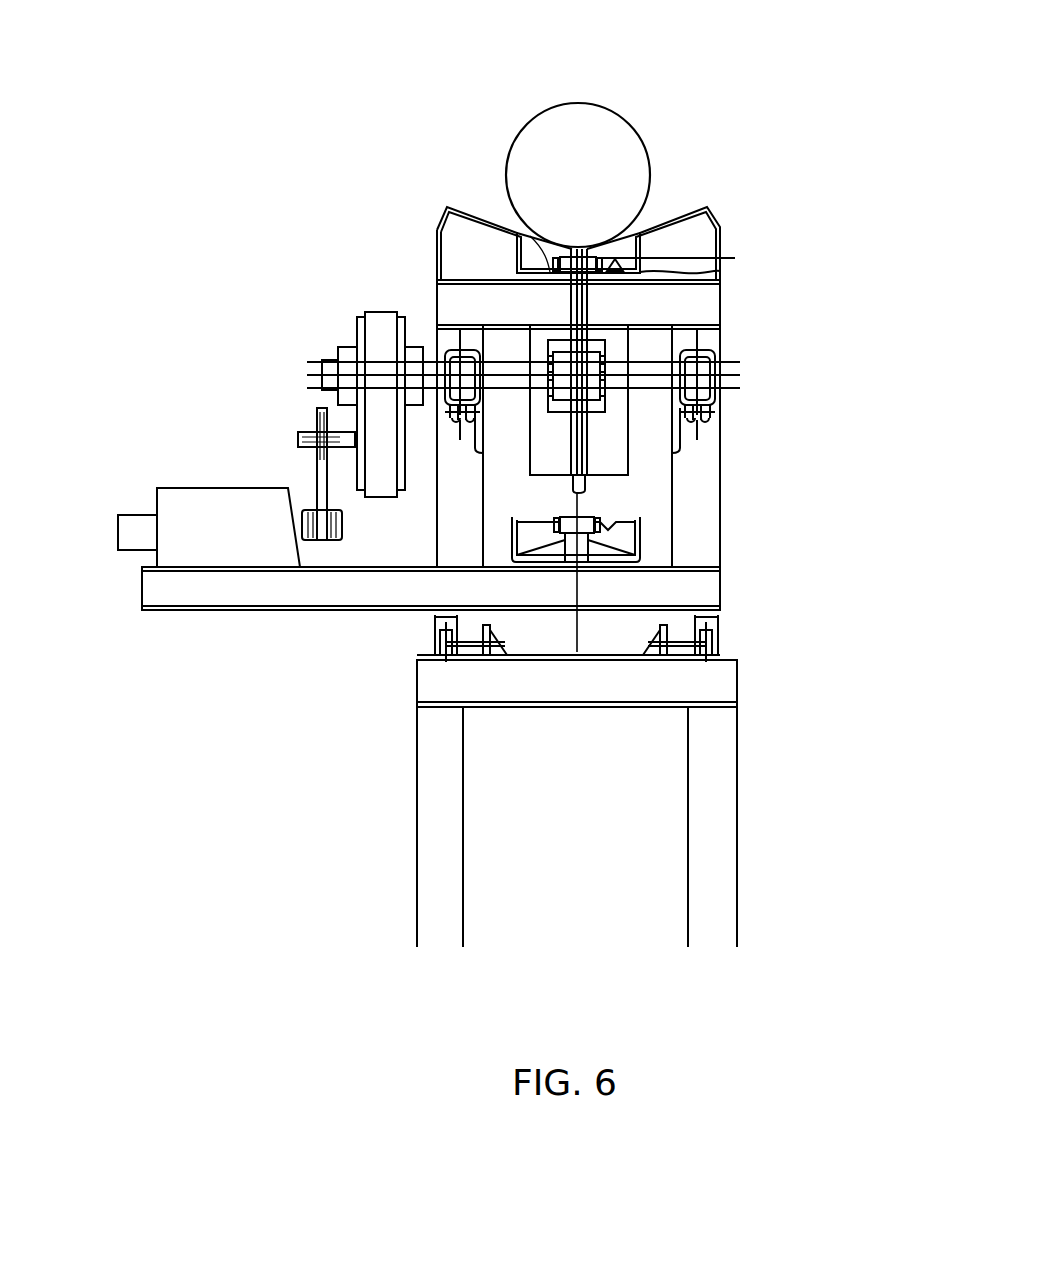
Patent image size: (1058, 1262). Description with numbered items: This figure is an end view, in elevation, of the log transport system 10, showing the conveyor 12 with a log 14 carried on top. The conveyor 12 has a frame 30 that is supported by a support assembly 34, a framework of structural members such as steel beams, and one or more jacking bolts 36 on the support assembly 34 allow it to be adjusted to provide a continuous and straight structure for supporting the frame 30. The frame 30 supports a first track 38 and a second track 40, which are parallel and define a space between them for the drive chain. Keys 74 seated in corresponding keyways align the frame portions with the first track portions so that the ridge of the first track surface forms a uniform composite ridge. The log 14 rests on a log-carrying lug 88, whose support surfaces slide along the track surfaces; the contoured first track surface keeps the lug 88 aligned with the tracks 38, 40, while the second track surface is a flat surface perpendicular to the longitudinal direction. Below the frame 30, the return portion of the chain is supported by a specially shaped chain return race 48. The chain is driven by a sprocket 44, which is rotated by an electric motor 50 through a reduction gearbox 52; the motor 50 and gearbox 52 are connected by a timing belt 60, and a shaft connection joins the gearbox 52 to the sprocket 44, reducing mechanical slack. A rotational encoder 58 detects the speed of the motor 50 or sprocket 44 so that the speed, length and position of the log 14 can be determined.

The log transport system 10 is at (795, 112).
The conveyor 12 is at (752, 246).
The log 14 is at (500, 161).
The frame 30 is at (720, 278).
The support assembly 34 is at (722, 462).
The jacking bolt 36 is at (440, 640).
The first track 38 is at (615, 262).
The second track 40 is at (445, 215).
The sprocket 44 is at (587, 450).
The chain return race 48 is at (640, 545).
The electric motor 50 is at (194, 488).
The reduction gearbox 52 is at (378, 312).
The rotational encoder 58 is at (120, 510).
The timing belt 60 is at (317, 480).
The key 74 is at (620, 288).
The log-carrying lug 88 is at (585, 245).